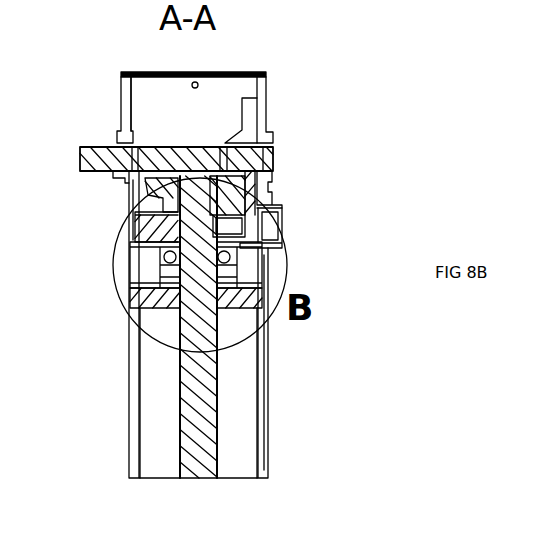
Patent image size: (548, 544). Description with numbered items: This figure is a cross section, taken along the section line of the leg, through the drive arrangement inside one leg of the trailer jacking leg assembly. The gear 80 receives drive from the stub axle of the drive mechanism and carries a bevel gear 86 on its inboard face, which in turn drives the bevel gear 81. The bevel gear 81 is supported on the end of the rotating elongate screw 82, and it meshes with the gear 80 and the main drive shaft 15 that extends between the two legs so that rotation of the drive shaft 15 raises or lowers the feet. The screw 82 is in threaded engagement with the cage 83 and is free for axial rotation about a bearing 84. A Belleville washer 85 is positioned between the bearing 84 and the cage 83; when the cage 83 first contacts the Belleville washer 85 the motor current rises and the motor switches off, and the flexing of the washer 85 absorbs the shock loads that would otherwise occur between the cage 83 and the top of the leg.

The drive shaft 15 is at (92, 157).
The gear 80 is at (128, 224).
The bevel gear 81 is at (265, 198).
The elongate screw 82 is at (204, 434).
The cage 83 is at (258, 276).
The bearing 84 is at (275, 243).
The Belleville washer 85 is at (182, 284).
The bevel gear 86 is at (233, 137).